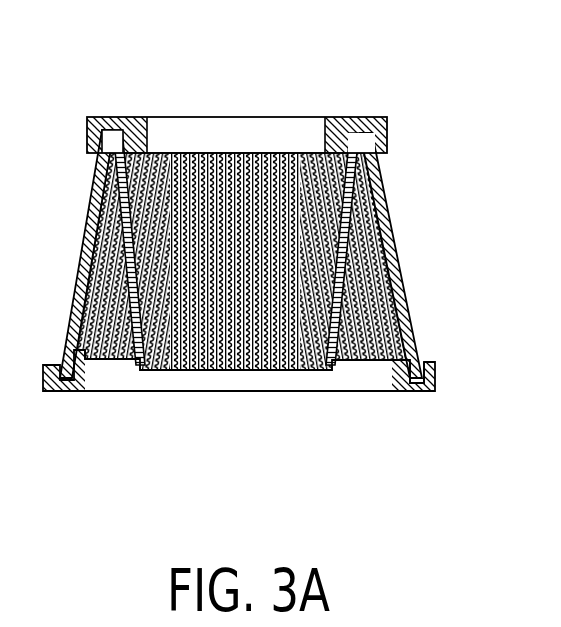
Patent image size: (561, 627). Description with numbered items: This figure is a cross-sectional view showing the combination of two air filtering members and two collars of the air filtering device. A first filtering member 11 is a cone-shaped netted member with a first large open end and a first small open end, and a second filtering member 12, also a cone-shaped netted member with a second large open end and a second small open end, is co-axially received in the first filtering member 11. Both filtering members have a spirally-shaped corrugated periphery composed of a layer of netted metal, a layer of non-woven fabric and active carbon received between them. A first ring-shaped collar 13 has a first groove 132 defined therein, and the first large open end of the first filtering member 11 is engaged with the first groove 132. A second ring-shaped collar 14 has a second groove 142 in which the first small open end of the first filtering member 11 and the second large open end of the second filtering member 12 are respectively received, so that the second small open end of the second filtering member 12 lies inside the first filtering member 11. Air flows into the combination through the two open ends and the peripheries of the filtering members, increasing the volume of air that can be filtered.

The first filtering member 11 is at (393, 258).
The second filtering member 12 is at (383, 182).
The first ring-shaped collar 13 is at (281, 427).
The first groove 132 is at (422, 397).
The second ring-shaped collar 14 is at (233, 88).
The second groove 142 is at (118, 122).